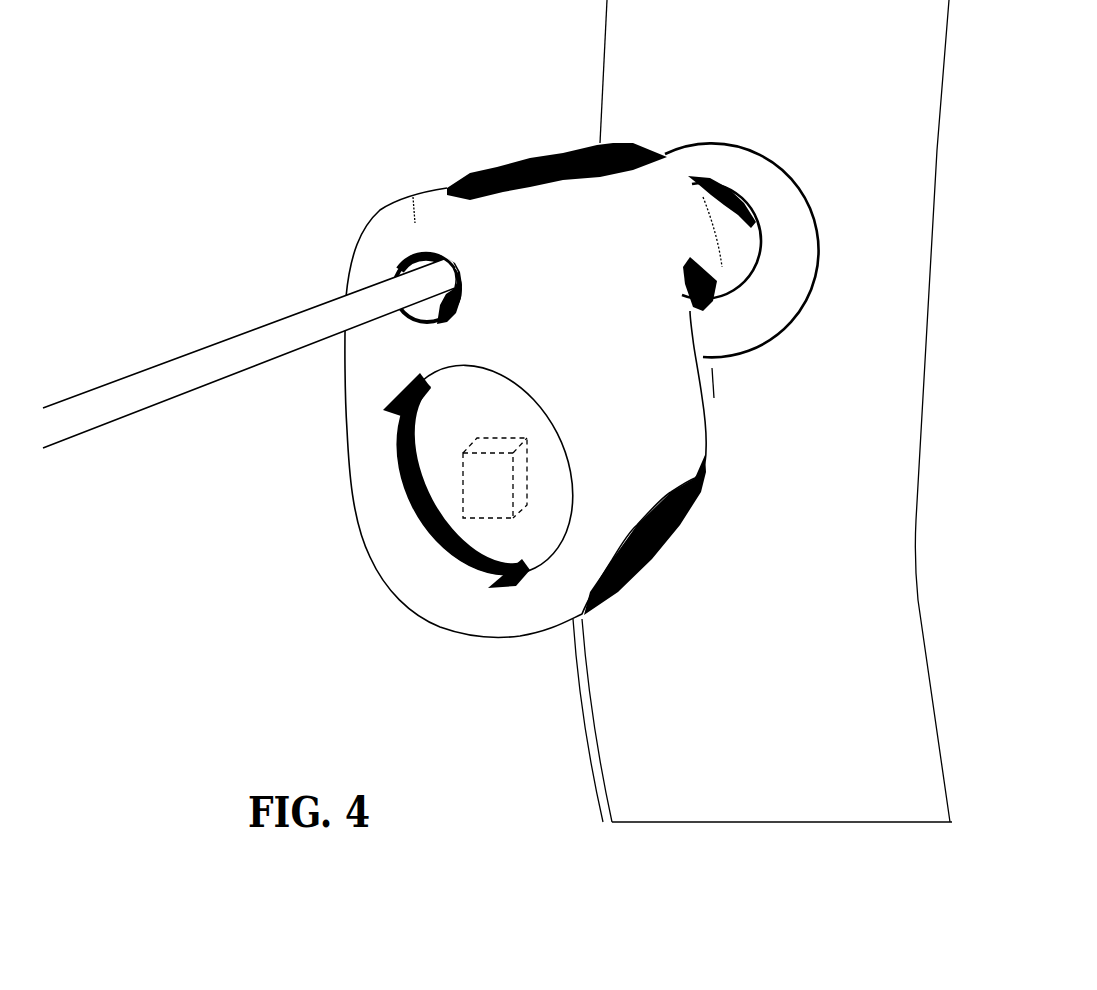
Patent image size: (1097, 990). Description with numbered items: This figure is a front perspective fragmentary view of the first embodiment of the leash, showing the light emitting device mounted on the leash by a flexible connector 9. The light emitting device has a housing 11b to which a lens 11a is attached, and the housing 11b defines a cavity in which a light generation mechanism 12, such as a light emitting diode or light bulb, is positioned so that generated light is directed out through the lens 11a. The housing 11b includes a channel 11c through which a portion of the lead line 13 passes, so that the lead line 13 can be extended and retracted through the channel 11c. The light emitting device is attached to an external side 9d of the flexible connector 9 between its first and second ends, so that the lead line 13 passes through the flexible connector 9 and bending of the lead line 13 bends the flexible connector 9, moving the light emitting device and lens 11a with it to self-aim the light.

The flexible connector 9 is at (723, 225).
The external side of the flexible connector 9d is at (738, 292).
The lens 11a is at (443, 470).
The housing of the light emitting device 11b is at (460, 634).
The channel 11c is at (395, 266).
The light generation mechanism 12 is at (500, 486).
The lead line 13 is at (165, 408).